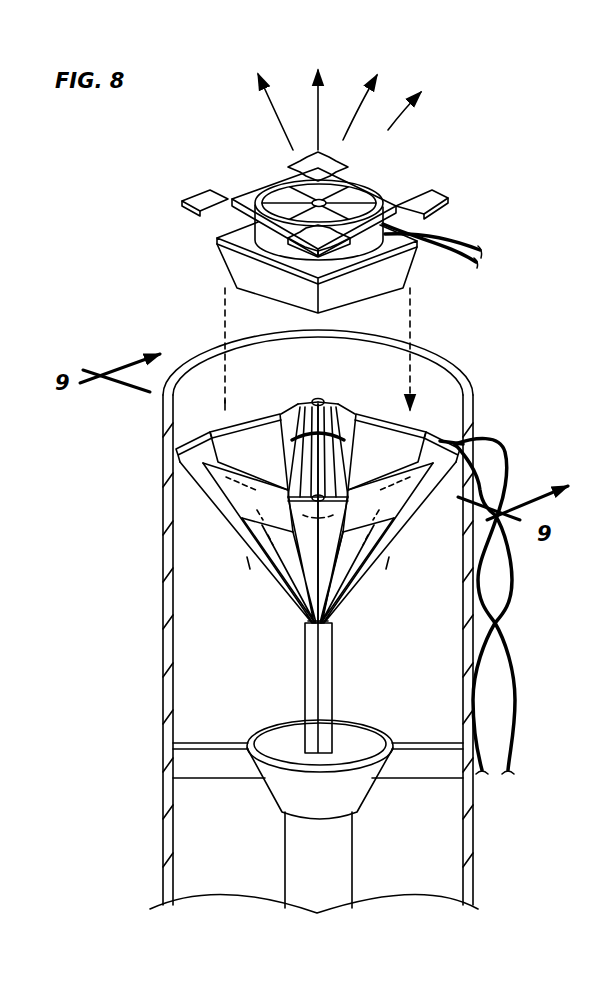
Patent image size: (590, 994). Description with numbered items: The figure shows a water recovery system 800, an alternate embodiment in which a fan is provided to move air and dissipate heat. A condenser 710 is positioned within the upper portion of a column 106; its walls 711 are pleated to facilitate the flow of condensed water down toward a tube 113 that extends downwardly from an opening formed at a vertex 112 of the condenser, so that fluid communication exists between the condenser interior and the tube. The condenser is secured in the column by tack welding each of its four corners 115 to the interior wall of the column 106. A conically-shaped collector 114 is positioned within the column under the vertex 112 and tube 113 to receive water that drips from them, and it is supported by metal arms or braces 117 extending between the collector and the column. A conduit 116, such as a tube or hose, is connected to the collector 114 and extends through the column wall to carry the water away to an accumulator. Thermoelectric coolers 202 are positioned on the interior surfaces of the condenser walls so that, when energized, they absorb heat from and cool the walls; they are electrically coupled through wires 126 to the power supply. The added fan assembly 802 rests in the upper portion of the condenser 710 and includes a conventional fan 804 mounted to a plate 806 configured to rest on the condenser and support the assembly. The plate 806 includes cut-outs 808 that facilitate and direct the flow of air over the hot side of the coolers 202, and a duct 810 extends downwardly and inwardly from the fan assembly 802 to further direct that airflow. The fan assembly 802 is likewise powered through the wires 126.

The column 106 is at (475, 808).
The vertex 112 is at (316, 625).
The tube 113 is at (328, 697).
The collector 114 is at (282, 742).
The corners 115 is at (318, 398).
The conduit 116 is at (297, 835).
The arms or braces 117 is at (186, 750).
The wires 126 is at (482, 246).
The Peltier Junction Module, or thermoelectric cooler (TEC) 202 is at (272, 440).
The condenser 710 is at (315, 510).
The walls 711 is at (342, 583).
The water recovery system 800 is at (303, 226).
The fan assembly 802 is at (321, 273).
The fan 804 is at (295, 190).
The plate 806 is at (318, 168).
The cut-outs 808 is at (236, 205).
The duct 810 is at (395, 265).